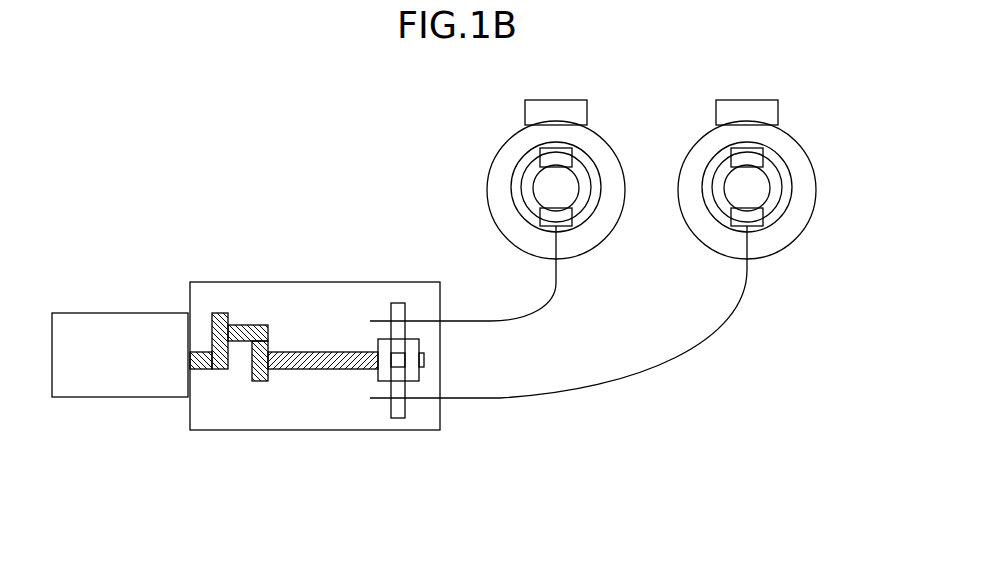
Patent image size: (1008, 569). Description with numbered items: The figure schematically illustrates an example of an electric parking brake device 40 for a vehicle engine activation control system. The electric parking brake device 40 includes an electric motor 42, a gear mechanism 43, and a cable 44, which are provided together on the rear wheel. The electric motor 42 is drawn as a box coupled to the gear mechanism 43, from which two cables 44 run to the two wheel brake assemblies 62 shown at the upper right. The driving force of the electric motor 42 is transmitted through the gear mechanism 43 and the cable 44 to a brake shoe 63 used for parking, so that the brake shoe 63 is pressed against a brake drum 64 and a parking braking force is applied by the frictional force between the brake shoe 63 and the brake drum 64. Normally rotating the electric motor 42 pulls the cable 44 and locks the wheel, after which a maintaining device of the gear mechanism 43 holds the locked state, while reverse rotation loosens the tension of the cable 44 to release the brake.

The electric parking brake device 40 is at (567, 488).
The electric motor 42 is at (118, 398).
The gear mechanism 43 is at (322, 430).
The cable 44 is at (514, 320).
The roller 62 is at (592, 248).
The brake shoe 63 is at (535, 199).
The brake drum 64 is at (519, 160).